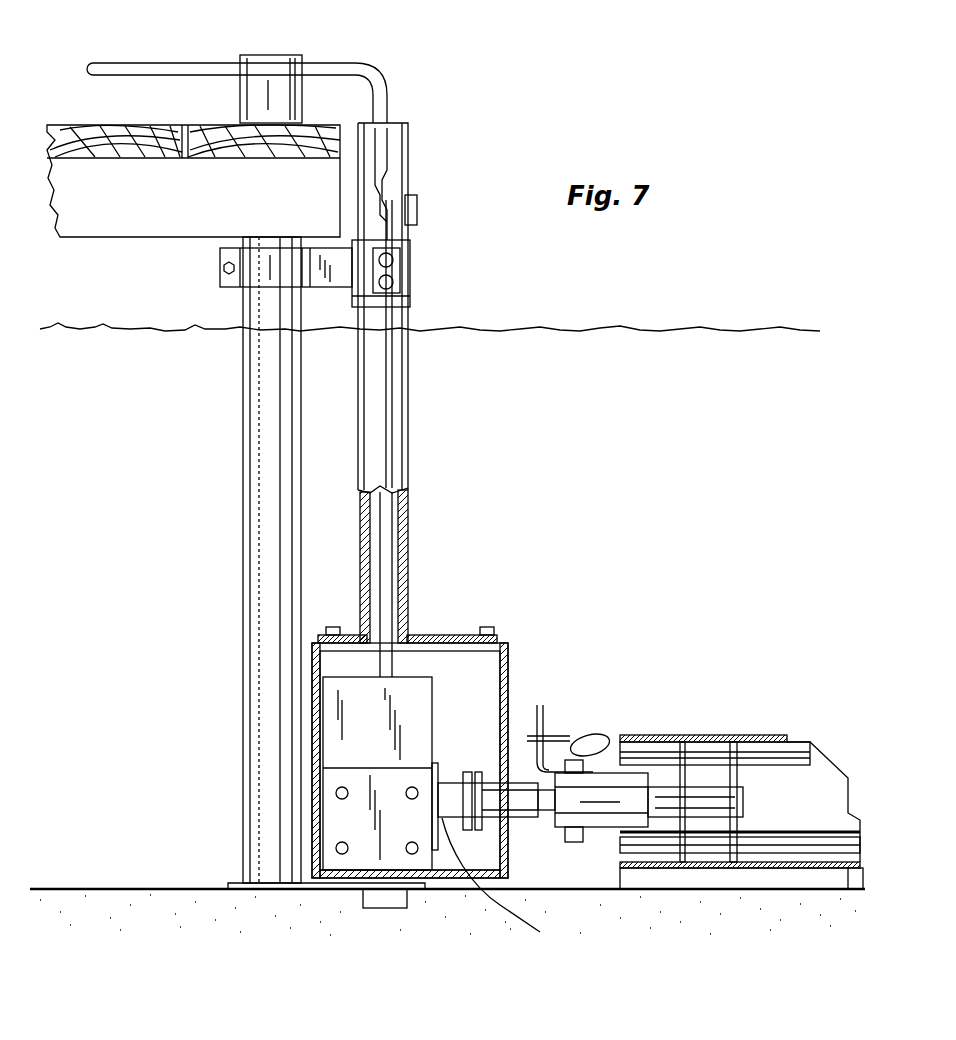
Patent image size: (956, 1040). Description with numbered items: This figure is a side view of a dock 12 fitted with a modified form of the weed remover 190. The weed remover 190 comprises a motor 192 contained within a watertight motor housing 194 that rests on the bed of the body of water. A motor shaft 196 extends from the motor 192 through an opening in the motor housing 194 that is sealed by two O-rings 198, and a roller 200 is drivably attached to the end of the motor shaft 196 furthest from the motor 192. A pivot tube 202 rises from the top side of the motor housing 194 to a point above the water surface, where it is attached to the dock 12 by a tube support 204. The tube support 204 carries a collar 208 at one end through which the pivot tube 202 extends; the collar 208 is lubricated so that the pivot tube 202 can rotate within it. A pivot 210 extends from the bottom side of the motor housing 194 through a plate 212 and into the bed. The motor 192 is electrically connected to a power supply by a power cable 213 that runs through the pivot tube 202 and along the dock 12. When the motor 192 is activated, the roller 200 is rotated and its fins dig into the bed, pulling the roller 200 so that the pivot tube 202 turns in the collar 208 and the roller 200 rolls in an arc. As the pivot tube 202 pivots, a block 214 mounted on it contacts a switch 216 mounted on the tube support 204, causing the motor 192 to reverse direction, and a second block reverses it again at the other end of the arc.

The dock 12 is at (110, 125).
The weed remover 190 is at (420, 72).
The motor 192 is at (333, 720).
The motor housing 194 is at (500, 660).
The motor shaft 196 is at (515, 886).
The O-rings 198 is at (470, 830).
The roller 200 is at (749, 733).
The pivot tube 202 is at (416, 372).
The tube support 204 is at (226, 291).
The collar 208 is at (410, 258).
The pivot 210 is at (393, 900).
The plate 212 is at (312, 886).
The power cable 213 is at (325, 63).
The block 214 is at (413, 195).
The switch 216 is at (380, 185).